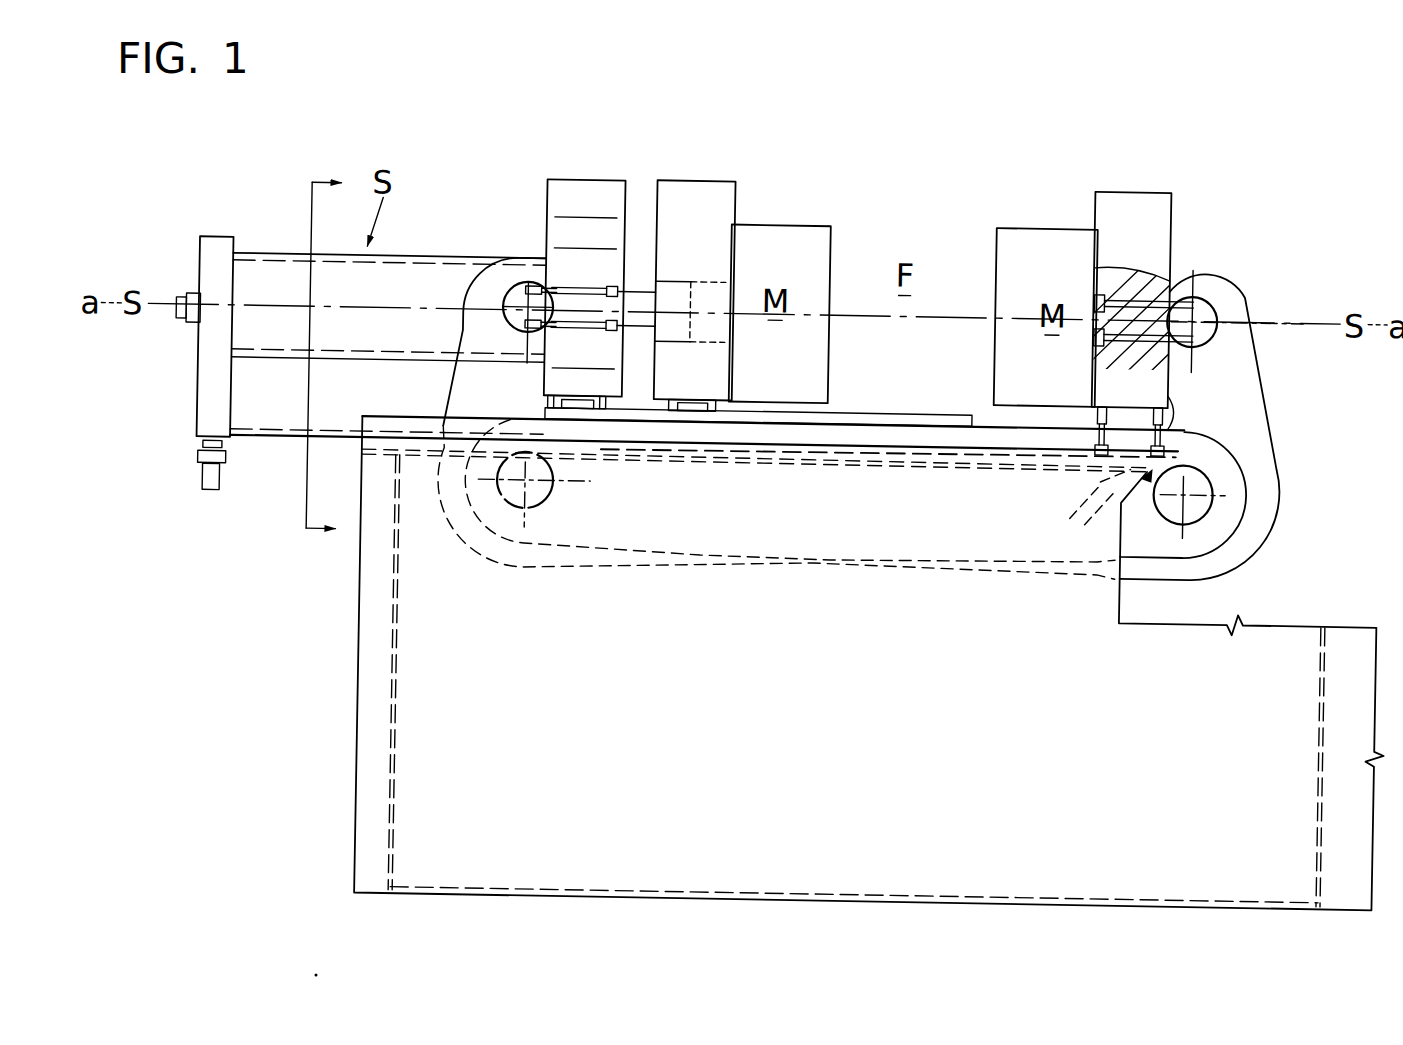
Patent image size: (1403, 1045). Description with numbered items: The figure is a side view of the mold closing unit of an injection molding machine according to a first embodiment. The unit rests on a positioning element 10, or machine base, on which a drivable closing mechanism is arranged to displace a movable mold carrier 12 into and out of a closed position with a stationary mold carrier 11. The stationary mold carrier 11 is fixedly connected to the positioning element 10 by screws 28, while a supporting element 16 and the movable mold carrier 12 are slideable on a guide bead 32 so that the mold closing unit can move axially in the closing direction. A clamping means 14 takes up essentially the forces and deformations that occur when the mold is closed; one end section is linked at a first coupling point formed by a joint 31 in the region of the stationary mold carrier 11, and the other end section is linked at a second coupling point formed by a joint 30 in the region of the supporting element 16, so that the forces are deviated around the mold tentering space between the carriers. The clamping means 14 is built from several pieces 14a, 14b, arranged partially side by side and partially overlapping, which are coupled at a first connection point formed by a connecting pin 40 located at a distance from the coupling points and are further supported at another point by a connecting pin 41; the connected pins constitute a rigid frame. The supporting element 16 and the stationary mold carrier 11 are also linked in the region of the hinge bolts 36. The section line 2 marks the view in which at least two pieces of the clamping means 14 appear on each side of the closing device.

The section line 2- 2 is at (318, 359).
The positioning element 10 is at (739, 622).
The stationary mold carrier 11 is at (1118, 199).
The movable mold carrier 12 is at (685, 195).
The clamping means 14 is at (801, 550).
The piece of the clamping means 14a is at (1216, 389).
The piece of the clamping means 14b is at (491, 393).
The supporting element 16 is at (570, 195).
The screws 28 is at (1092, 470).
The joint 30 is at (860, 310).
The joint 31 is at (1248, 374).
The guide bead 32 is at (854, 413).
The hinge bolts 36 is at (512, 300).
The connecting pin 40 is at (1245, 496).
The connecting pin 41 is at (535, 500).